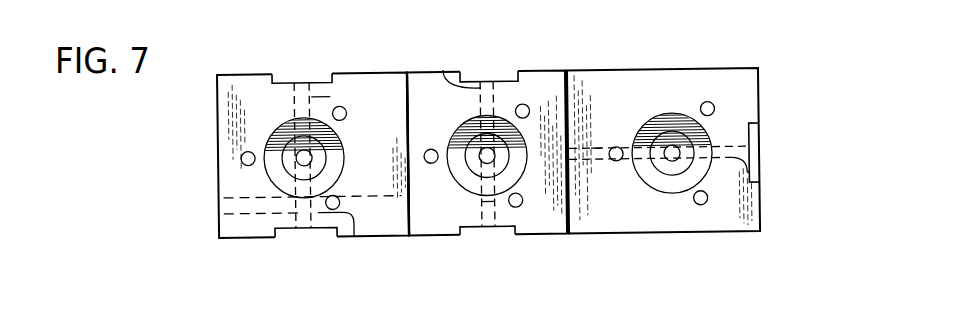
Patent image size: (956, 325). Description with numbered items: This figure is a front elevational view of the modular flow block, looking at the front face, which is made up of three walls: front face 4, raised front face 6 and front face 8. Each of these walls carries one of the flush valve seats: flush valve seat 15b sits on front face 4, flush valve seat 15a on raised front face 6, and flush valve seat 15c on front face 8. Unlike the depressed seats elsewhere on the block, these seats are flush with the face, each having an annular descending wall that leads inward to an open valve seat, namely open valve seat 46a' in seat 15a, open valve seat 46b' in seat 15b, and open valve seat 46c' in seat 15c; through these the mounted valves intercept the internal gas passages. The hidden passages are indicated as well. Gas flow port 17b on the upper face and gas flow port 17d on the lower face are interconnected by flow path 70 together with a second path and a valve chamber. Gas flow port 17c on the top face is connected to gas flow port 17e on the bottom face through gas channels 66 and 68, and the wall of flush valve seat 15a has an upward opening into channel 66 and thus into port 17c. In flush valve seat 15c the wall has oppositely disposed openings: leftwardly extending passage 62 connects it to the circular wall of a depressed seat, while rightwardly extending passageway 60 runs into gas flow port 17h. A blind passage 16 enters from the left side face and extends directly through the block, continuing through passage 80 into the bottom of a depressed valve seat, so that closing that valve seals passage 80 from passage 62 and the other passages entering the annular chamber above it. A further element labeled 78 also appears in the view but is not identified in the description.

The front face wall 4 is at (384, 172).
The raised front face wall 6 is at (551, 200).
The front face wall 8 is at (631, 210).
The flush valve seat 15a is at (520, 150).
The flush valve seat 15b is at (281, 141).
The flush valve seat 15c is at (713, 128).
The blind passage 16 is at (222, 198).
The gas flow port 17b is at (333, 73).
The gas flow port 17c is at (508, 70).
The gas flow port 17d is at (313, 228).
The gas flow port 17e is at (511, 232).
The gas flow port 17h is at (760, 125).
The open valve seat 46a' is at (458, 128).
The open valve seat 46b' is at (346, 142).
The open valve seat 46c' is at (692, 95).
The passageway 60 is at (763, 162).
The passage 62 is at (593, 147).
The gas channel 66 is at (443, 70).
The gas channel 68 is at (482, 205).
The flow path 70 is at (338, 95).
The lower passage 78 is at (255, 214).
The passage 80 is at (352, 235).